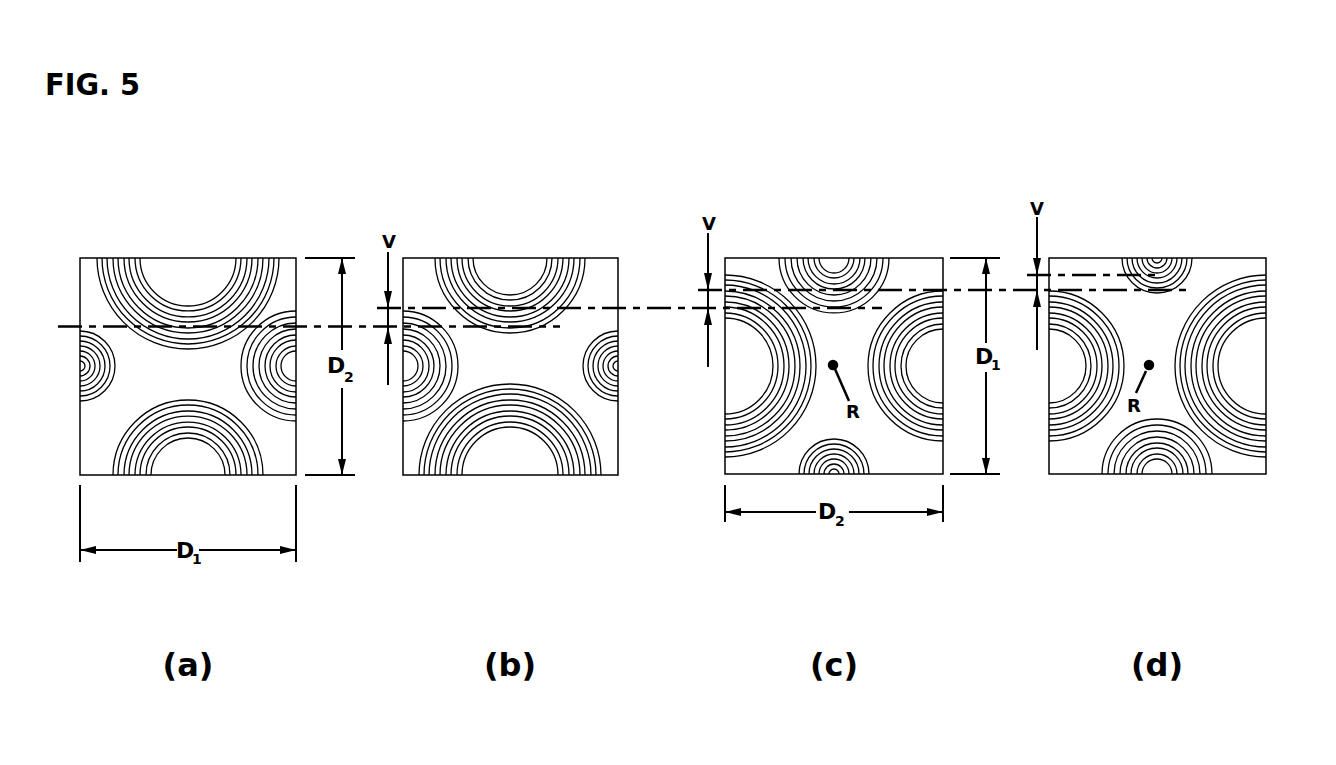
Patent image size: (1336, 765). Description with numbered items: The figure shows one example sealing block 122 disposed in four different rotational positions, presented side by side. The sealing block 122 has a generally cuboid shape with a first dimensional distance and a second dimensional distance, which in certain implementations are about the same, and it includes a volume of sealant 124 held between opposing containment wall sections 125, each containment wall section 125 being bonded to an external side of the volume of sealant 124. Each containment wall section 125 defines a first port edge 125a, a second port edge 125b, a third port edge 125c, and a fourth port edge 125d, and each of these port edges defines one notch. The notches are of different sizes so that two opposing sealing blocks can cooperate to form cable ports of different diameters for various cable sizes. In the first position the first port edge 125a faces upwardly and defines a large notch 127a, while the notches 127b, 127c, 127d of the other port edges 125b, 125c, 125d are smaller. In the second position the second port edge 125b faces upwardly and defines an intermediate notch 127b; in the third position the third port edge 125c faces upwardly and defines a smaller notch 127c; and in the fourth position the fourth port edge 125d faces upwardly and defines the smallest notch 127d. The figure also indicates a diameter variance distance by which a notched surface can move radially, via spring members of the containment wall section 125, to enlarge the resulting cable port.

The sealing block 122 is at (76, 245).
The volume of sealant 124 is at (156, 257).
The containment wall section 125 is at (198, 384).
The first port edge 125a is at (284, 257).
The second port edge 125b is at (604, 256).
The third port edge 125c is at (752, 256).
The fourth port edge 125d is at (1238, 256).
The large notch 127a is at (171, 302).
The intermediate notch 127b is at (480, 278).
The smaller notch 127c is at (826, 270).
The smallest notch 127d is at (1158, 256).